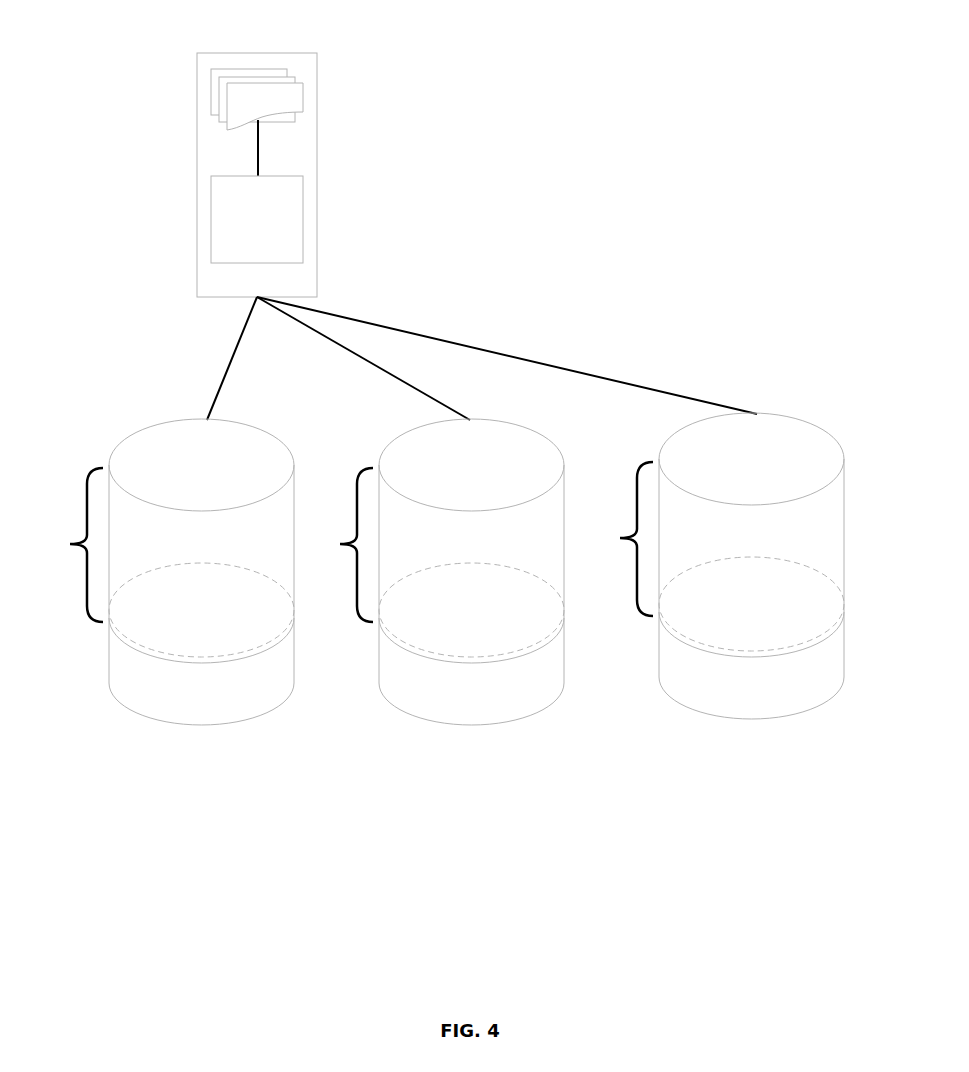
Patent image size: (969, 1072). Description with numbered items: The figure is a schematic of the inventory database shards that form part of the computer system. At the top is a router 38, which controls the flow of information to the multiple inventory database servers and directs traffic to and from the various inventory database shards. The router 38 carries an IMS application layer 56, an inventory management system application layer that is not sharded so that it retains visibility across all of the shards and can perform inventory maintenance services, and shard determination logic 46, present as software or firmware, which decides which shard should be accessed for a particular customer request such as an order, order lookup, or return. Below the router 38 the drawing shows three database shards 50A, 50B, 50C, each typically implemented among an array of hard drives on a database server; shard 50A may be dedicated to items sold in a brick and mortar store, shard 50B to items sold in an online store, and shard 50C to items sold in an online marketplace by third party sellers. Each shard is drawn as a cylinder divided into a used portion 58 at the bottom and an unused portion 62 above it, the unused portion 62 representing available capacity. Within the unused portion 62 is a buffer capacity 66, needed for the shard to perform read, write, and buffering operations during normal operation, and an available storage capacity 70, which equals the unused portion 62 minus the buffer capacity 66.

The router 38 is at (278, 160).
The IMS application layer 56 is at (305, 78).
The shard determination logic 46 is at (305, 170).
The shard 50A is at (263, 446).
The shard 50B is at (533, 446).
The shard 50C is at (813, 440).
The unused portion 62 is at (343, 542).
The available storage capacity 70 is at (271, 525).
The buffer capacity 66 is at (271, 639).
The used portion 58 is at (271, 679).